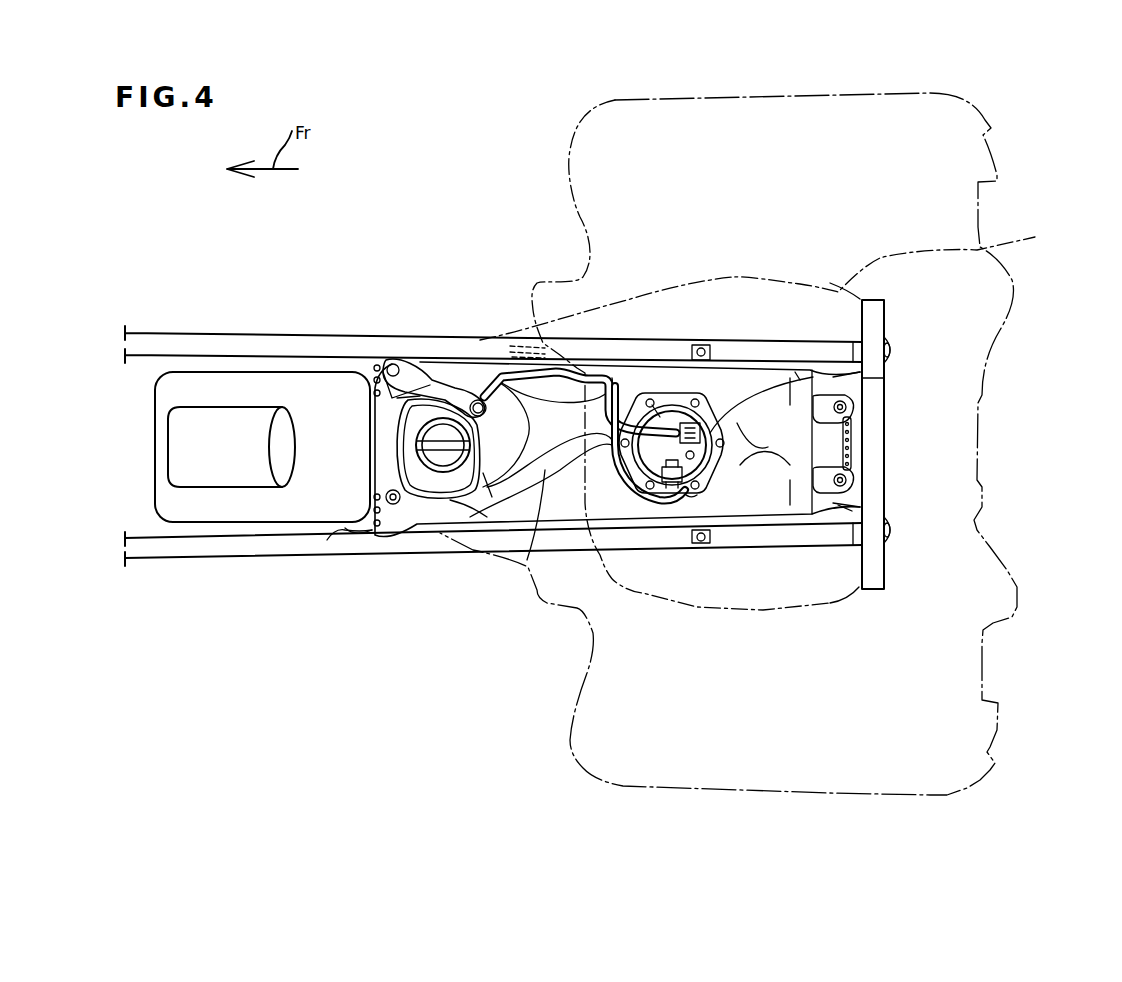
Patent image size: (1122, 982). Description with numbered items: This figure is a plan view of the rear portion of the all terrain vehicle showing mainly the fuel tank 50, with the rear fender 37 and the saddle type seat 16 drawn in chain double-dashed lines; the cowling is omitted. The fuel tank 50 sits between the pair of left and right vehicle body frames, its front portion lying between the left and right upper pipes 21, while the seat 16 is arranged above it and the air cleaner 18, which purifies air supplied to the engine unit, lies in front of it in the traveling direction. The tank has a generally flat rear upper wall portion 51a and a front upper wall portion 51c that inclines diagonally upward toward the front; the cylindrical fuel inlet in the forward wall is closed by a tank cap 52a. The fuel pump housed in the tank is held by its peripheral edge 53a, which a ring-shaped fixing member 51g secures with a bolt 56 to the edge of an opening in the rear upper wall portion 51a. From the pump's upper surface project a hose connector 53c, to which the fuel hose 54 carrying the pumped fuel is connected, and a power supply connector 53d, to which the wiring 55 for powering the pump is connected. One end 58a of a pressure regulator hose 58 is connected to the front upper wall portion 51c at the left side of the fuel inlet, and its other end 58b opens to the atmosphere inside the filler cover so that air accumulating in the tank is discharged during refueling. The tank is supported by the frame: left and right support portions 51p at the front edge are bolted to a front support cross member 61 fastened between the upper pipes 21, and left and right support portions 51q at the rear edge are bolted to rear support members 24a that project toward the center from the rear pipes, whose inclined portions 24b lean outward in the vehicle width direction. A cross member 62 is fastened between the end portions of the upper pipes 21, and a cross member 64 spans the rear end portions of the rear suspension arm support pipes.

The saddle type seat 16 is at (773, 283).
The air cleaner 18 is at (237, 372).
The upper pipe 21 is at (232, 556).
The rear support member 24a is at (844, 497).
The inclined portion 24b is at (852, 511).
The rear fender 37 is at (982, 212).
The fuel tank 50 is at (747, 525).
The rear upper wall portion 51a is at (800, 380).
The front upper wall portion 51c is at (484, 478).
The fixing member 51g is at (697, 500).
The support portion 51p is at (372, 365).
The support portion 51q is at (852, 470).
The tank cap 52a is at (443, 472).
The peripheral edge 53a is at (670, 455).
The hose connector 53c is at (884, 378).
The power supply connector 53d is at (660, 417).
The fuel hose 54 is at (636, 368).
The wiring 55 is at (545, 500).
The bolt 56 is at (614, 487).
The pressure regulator hose 58 is at (432, 378).
The one end of pressure regulator hose 58a is at (478, 400).
The other end of pressure regulator hose 58b is at (393, 364).
The front support cross member 61 is at (355, 528).
The cross member 62 is at (884, 317).
The cross member 64 is at (861, 434).